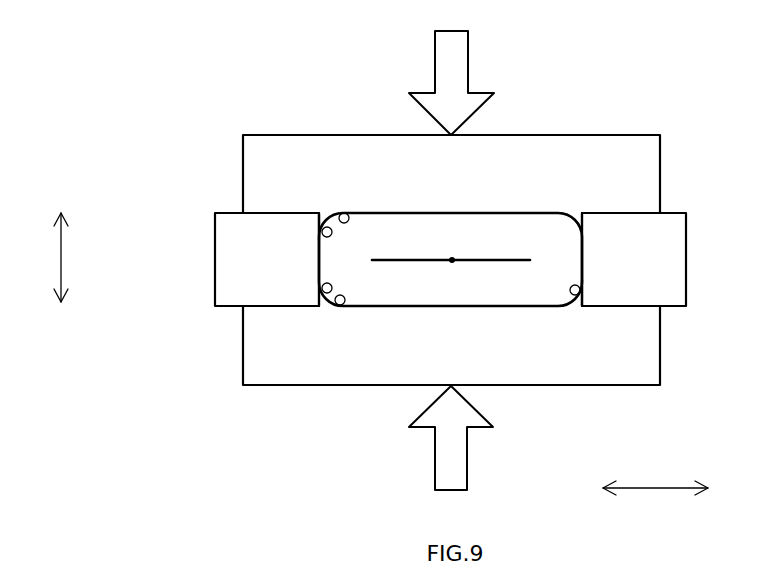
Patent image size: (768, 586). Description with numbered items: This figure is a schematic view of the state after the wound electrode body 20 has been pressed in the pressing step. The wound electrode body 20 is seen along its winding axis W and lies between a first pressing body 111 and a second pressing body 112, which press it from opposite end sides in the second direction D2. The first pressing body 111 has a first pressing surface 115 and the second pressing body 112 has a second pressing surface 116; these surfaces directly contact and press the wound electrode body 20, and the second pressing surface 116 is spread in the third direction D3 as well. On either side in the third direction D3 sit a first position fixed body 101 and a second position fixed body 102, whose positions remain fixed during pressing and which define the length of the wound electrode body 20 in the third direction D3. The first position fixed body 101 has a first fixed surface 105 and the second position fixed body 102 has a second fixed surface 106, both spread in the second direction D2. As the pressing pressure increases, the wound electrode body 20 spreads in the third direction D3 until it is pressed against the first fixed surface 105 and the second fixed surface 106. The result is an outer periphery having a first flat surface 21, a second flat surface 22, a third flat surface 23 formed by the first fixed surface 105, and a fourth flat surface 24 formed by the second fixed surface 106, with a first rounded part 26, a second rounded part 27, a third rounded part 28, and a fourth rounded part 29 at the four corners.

The wound electrode body 20 is at (547, 212).
The first flat surface 21 is at (400, 307).
The second flat surface 22 is at (393, 212).
The third flat surface 23 is at (583, 257).
The fourth flat surface 24 is at (320, 262).
The first rounded part 26 is at (578, 304).
The second rounded part 27 is at (320, 302).
The third rounded part 28 is at (573, 215).
The fourth rounded part 29 is at (322, 212).
The first position fixed body 101 is at (682, 278).
The second position fixed body 102 is at (223, 281).
The first fixed surface 105 is at (582, 285).
The second fixed surface 106 is at (318, 237).
The first pressing body 111 is at (541, 387).
The second pressing body 112 is at (620, 134).
The first pressing surface 115 is at (343, 305).
The second pressing surface 116 is at (355, 212).
The winding axis W is at (452, 258).
The second direction D2 is at (45, 257).
The third direction D3 is at (655, 502).